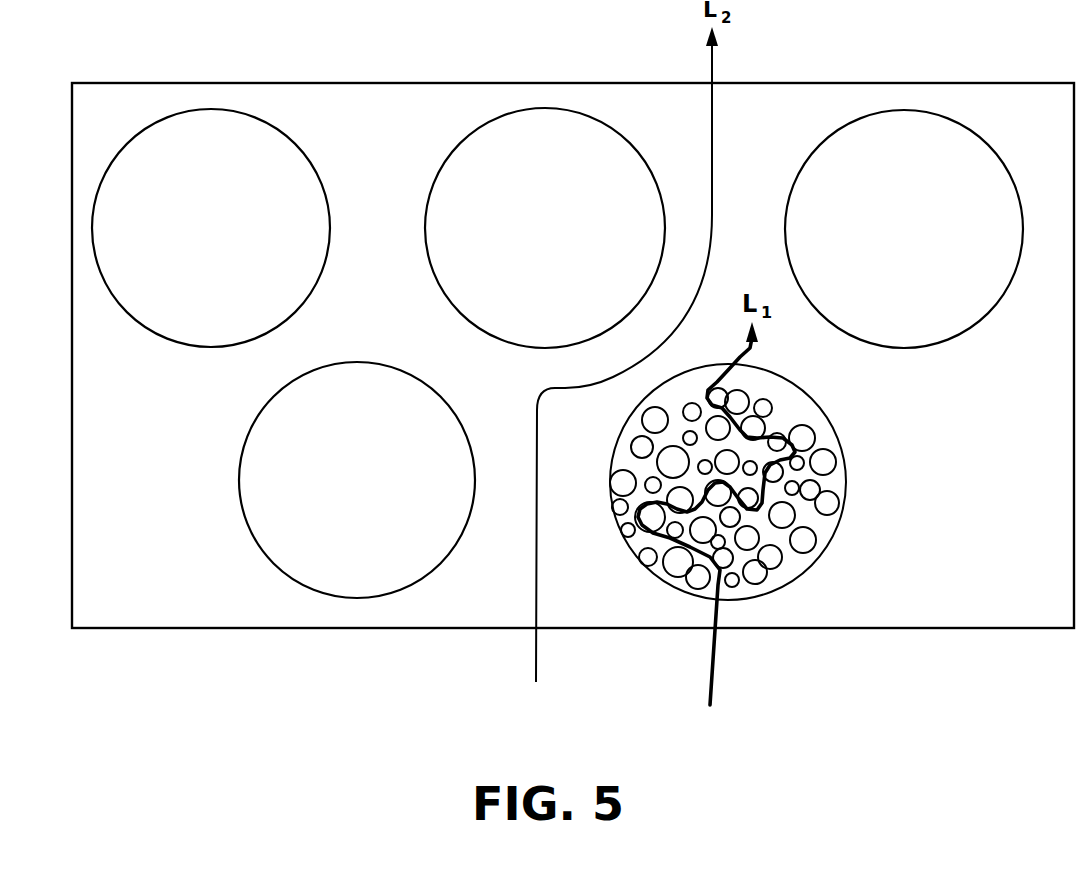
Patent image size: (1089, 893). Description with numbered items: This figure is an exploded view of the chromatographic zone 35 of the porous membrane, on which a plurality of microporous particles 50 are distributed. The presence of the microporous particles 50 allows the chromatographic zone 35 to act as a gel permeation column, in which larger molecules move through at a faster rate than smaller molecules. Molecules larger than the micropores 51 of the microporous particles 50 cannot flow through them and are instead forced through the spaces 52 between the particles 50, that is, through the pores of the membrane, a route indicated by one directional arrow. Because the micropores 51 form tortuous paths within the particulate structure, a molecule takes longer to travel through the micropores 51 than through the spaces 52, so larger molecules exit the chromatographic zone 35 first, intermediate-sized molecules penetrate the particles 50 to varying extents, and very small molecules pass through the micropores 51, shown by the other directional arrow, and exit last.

The chromatographic zone 35 is at (94, 668).
The microporous particles 50 is at (845, 530).
The micropores 51 is at (682, 582).
The spaces between the particles 52 is at (830, 102).